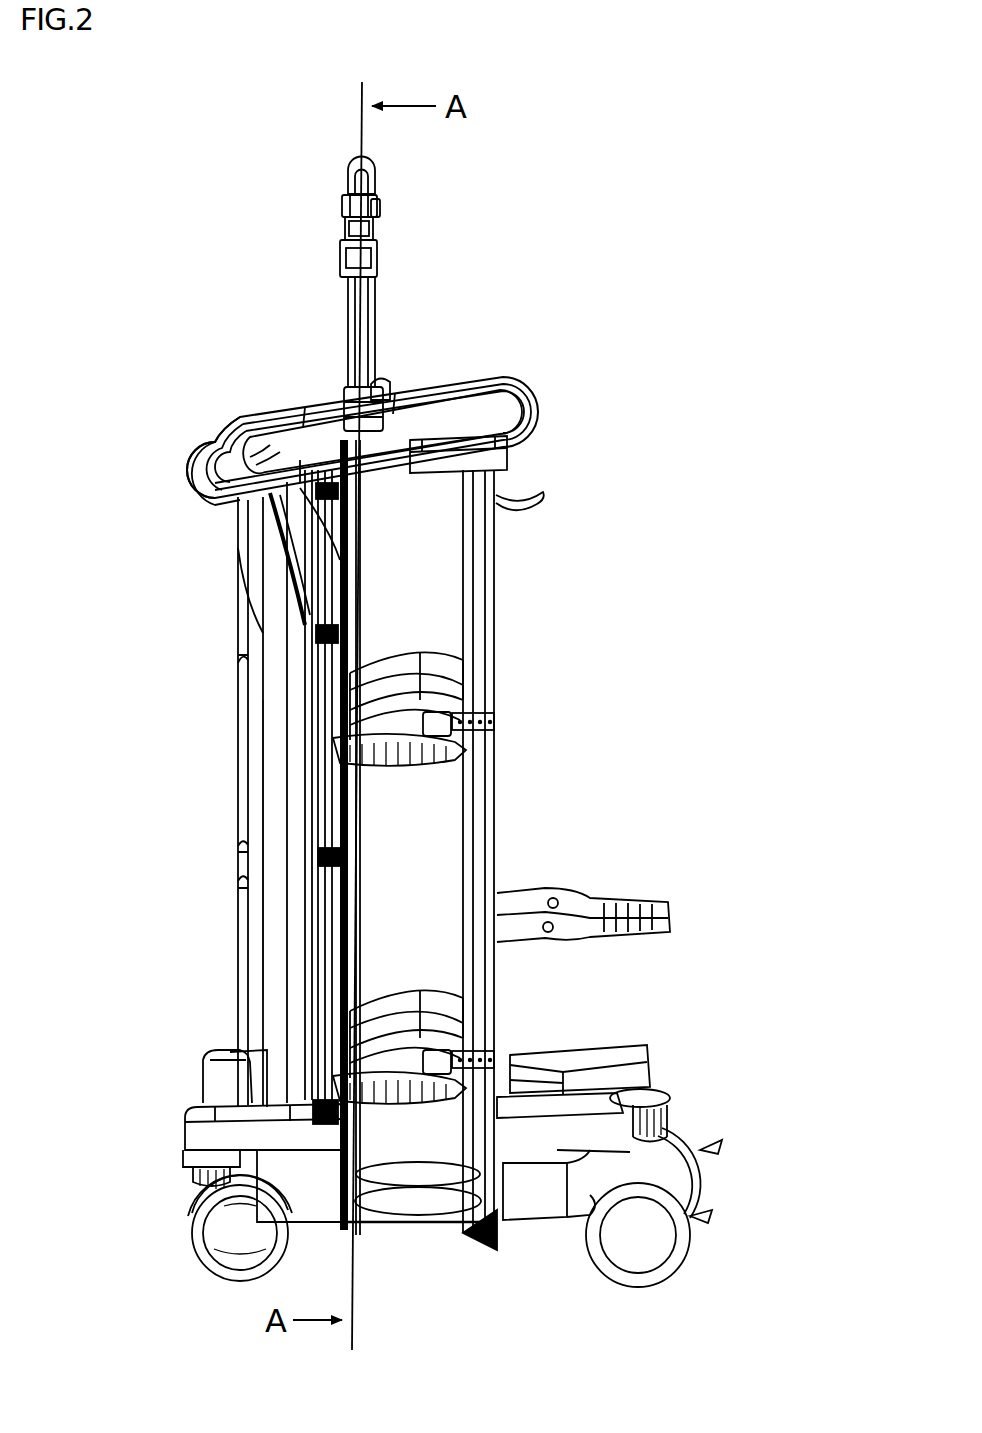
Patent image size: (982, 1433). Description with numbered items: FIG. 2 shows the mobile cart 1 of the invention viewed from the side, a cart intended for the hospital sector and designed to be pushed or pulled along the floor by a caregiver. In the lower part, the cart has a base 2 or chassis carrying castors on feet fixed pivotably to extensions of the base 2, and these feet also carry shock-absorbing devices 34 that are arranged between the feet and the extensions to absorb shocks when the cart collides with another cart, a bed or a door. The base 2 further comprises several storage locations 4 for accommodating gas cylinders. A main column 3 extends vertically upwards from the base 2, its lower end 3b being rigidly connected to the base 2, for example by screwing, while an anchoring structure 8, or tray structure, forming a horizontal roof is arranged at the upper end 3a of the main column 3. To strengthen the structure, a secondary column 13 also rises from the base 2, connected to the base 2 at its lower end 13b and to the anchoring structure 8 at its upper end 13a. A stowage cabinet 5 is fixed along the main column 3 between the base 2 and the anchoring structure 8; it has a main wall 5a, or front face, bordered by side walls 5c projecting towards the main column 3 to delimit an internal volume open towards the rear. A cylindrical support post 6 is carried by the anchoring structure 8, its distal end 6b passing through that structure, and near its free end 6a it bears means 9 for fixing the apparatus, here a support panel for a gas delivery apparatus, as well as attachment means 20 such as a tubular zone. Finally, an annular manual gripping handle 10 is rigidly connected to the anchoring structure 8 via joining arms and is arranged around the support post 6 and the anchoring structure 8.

The mobile cart 1 is at (690, 310).
The base 2 is at (262, 1173).
The main column 3 is at (358, 611).
The upper end of main column 3a is at (305, 494).
The lower end of main column 3b is at (306, 1110).
The storage locations 4 is at (440, 1188).
The stowage cabinet 5 is at (234, 718).
The main wall 5a is at (236, 857).
The side walls 5c is at (280, 826).
The support post 6 is at (344, 316).
The free end of support post 6a is at (380, 207).
The distal end of support post 6b is at (381, 378).
The anchoring structure 8 is at (432, 410).
The means for fixing the apparatus 9 is at (337, 223).
The manual gripping handle 10 is at (226, 414).
The secondary column 13 is at (500, 787).
The upper end of secondary column 13a is at (510, 456).
The lower end of secondary column 13b is at (497, 1237).
The attachment means 20 is at (382, 168).
The shock-absorbing devices 34 is at (183, 1147).